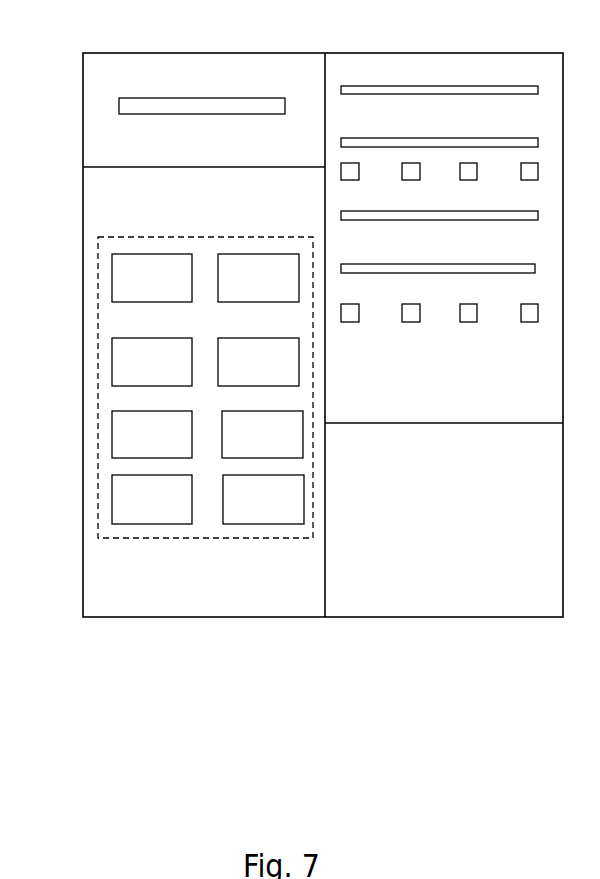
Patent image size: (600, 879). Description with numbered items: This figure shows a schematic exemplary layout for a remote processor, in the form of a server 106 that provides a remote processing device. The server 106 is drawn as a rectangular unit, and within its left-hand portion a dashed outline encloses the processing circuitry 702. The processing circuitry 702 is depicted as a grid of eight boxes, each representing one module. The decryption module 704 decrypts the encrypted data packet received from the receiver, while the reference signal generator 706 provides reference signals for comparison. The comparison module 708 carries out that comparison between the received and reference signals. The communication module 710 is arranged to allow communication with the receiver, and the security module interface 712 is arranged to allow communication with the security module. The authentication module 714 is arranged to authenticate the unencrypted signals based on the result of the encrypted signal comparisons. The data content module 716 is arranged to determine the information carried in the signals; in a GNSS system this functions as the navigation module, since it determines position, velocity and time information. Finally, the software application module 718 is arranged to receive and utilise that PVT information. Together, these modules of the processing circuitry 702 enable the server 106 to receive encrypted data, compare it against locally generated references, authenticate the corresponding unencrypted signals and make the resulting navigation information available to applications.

The server 106 is at (273, 53).
The processing circuitry 702 is at (98, 237).
The decryption module 704 is at (167, 289).
The reference signal generator 706 is at (274, 289).
The comparison module 708 is at (167, 373).
The communication module 710 is at (274, 373).
The security module interface 712 is at (167, 445).
The authentication module 714 is at (278, 445).
The data content module 716 is at (167, 510).
The software application module 718 is at (279, 510).